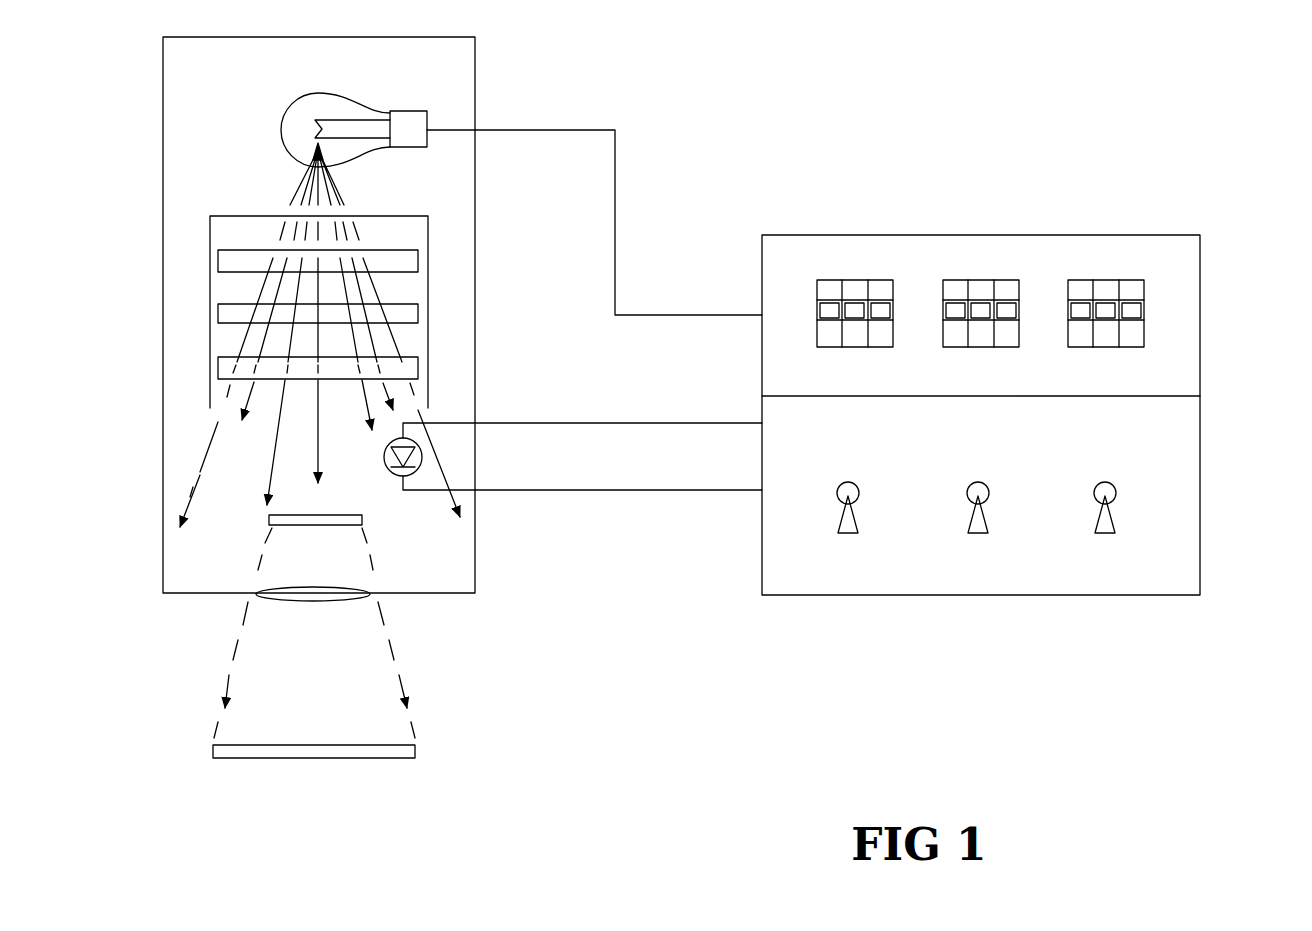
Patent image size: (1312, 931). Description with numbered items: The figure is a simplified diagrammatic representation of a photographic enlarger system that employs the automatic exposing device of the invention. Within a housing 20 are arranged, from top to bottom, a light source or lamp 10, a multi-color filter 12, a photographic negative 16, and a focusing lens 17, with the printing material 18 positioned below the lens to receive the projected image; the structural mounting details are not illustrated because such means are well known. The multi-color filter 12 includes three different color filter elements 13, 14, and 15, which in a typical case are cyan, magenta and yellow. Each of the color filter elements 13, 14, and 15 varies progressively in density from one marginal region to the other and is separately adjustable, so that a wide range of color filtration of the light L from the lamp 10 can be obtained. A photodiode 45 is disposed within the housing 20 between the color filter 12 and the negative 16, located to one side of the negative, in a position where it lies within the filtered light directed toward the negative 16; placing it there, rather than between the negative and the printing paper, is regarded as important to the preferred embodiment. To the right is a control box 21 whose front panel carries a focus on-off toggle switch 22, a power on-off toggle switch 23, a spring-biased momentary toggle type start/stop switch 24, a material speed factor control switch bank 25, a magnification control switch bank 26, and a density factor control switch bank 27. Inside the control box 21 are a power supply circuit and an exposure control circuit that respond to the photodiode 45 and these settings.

The light source or lamp 10 is at (296, 116).
The multi-color filter 12 is at (206, 226).
The color filter element 13 is at (218, 261).
The color filter element 14 is at (218, 314).
The color filter element 15 is at (218, 369).
The photographic negative 16 is at (303, 513).
The focusing lens 17 is at (318, 602).
The printing material 18 is at (323, 745).
The housing 20 is at (160, 124).
The control box 21 is at (1200, 415).
The focus on-off toggle switch 22 is at (1105, 528).
The power on-off toggle switch 23 is at (848, 528).
The start/stop switch 24 is at (978, 528).
The material speed factor control switch bank 25 is at (831, 280).
The magnification control switch bank 26 is at (958, 280).
The density factor control switch bank 27 is at (1082, 280).
The photodiode 45 is at (423, 457).
The light rays L is at (305, 180).